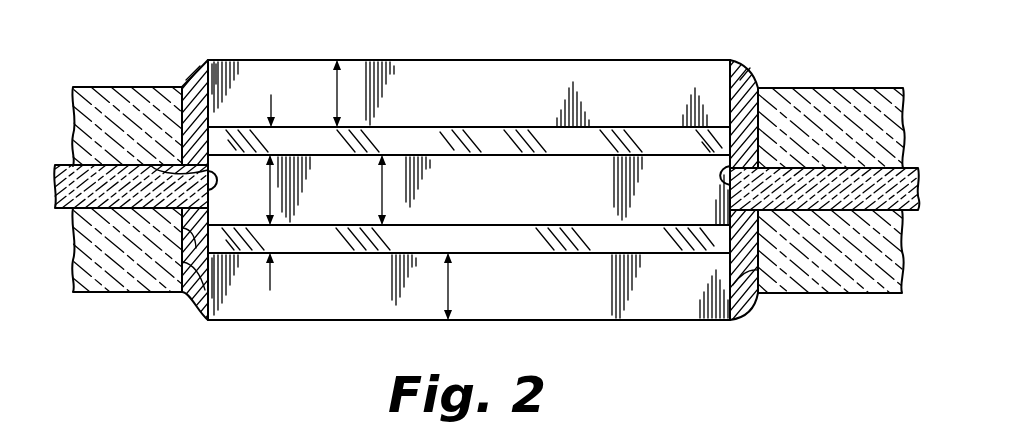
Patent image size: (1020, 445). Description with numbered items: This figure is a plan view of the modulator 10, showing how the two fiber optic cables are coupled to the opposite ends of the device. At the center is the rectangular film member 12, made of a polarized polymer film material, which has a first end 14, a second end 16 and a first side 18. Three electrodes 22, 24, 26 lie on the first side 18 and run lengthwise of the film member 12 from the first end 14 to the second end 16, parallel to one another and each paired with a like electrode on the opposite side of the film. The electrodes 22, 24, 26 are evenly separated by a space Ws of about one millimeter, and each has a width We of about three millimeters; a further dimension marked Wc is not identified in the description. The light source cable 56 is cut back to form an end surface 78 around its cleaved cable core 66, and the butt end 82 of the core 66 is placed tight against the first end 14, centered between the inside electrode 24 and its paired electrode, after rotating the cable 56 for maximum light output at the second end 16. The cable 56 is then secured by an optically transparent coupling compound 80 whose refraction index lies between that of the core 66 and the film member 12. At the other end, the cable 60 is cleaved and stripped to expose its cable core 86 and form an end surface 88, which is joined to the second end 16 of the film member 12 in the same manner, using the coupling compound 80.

The modulator 10 is at (362, 337).
The film member 12 is at (283, 320).
The first end 14 is at (174, 293).
The second end 16 is at (760, 293).
The first side 18 is at (452, 145).
The electrode 22 is at (603, 85).
The electrode 24 is at (645, 155).
The electrode 26 is at (587, 272).
The light source cable 56 is at (147, 87).
The cable 60 is at (835, 88).
The cable core 66 is at (73, 295).
The end surface 78 is at (108, 188).
The coupling compound 80 is at (193, 80).
The butt end 82 is at (157, 165).
The cable core 86 is at (823, 197).
The end surface 88 is at (763, 150).
The space Ws is at (255, 140).
The electrode layer width Wc is at (340, 93).
The electrode width We is at (478, 345).